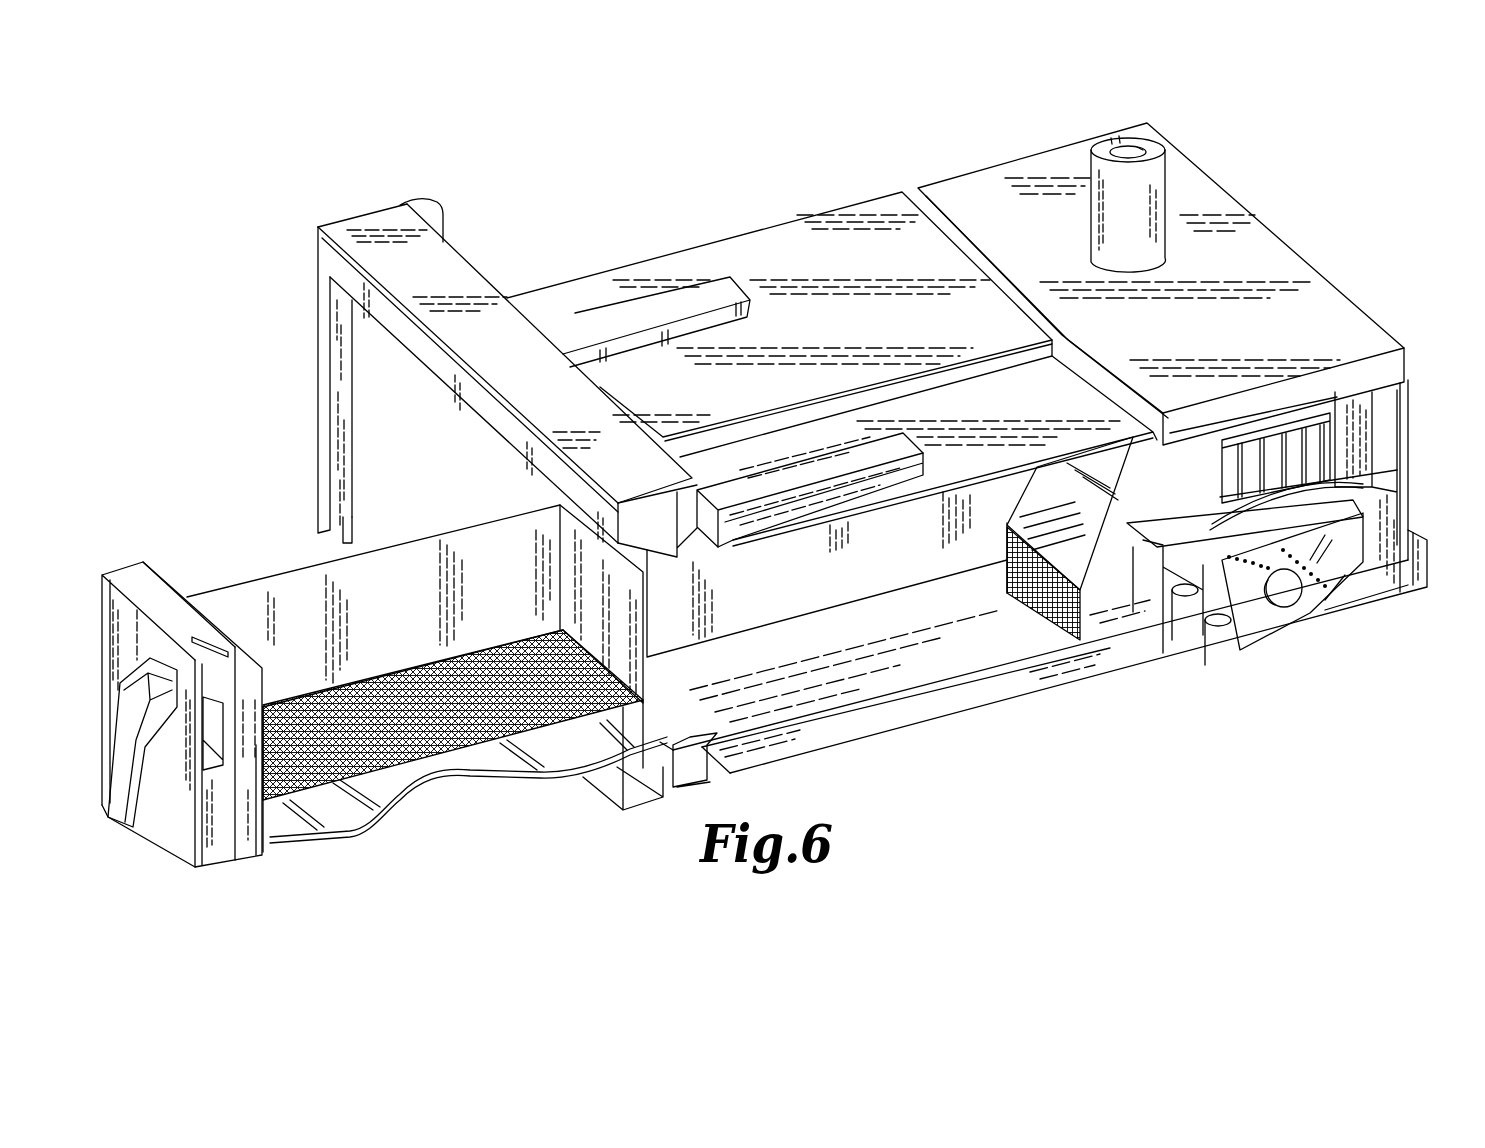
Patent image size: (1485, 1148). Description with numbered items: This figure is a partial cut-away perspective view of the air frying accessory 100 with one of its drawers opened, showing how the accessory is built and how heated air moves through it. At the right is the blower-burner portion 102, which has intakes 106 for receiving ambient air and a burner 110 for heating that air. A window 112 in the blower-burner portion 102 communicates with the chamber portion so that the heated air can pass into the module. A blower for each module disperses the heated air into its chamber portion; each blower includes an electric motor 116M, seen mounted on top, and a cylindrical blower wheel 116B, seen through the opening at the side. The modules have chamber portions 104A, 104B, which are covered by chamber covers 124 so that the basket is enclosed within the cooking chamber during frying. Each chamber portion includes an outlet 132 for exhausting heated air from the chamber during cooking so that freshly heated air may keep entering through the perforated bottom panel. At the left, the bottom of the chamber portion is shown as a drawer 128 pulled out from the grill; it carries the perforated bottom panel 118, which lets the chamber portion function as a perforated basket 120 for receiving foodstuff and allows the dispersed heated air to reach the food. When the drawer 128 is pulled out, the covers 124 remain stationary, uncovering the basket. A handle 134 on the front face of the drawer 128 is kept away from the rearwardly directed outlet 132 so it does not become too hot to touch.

The air frying accessory 100 is at (338, 212).
The blower-burner portion 102 is at (1358, 605).
The chamber portion 104A is at (372, 425).
The chamber portion 104B is at (948, 683).
The intakes 106 is at (1187, 598).
The burner 110 is at (1307, 620).
The window 112 is at (1160, 622).
The electric motor 116M is at (1160, 145).
The cylindrical blower wheel 116B is at (1330, 432).
The perforated bottom panel 118 is at (350, 782).
The perforated basket 120 is at (297, 606).
The chamber cover 124 is at (886, 267).
The drawer 128 is at (222, 862).
The outlet 132 is at (805, 462).
The handle 134 is at (112, 828).